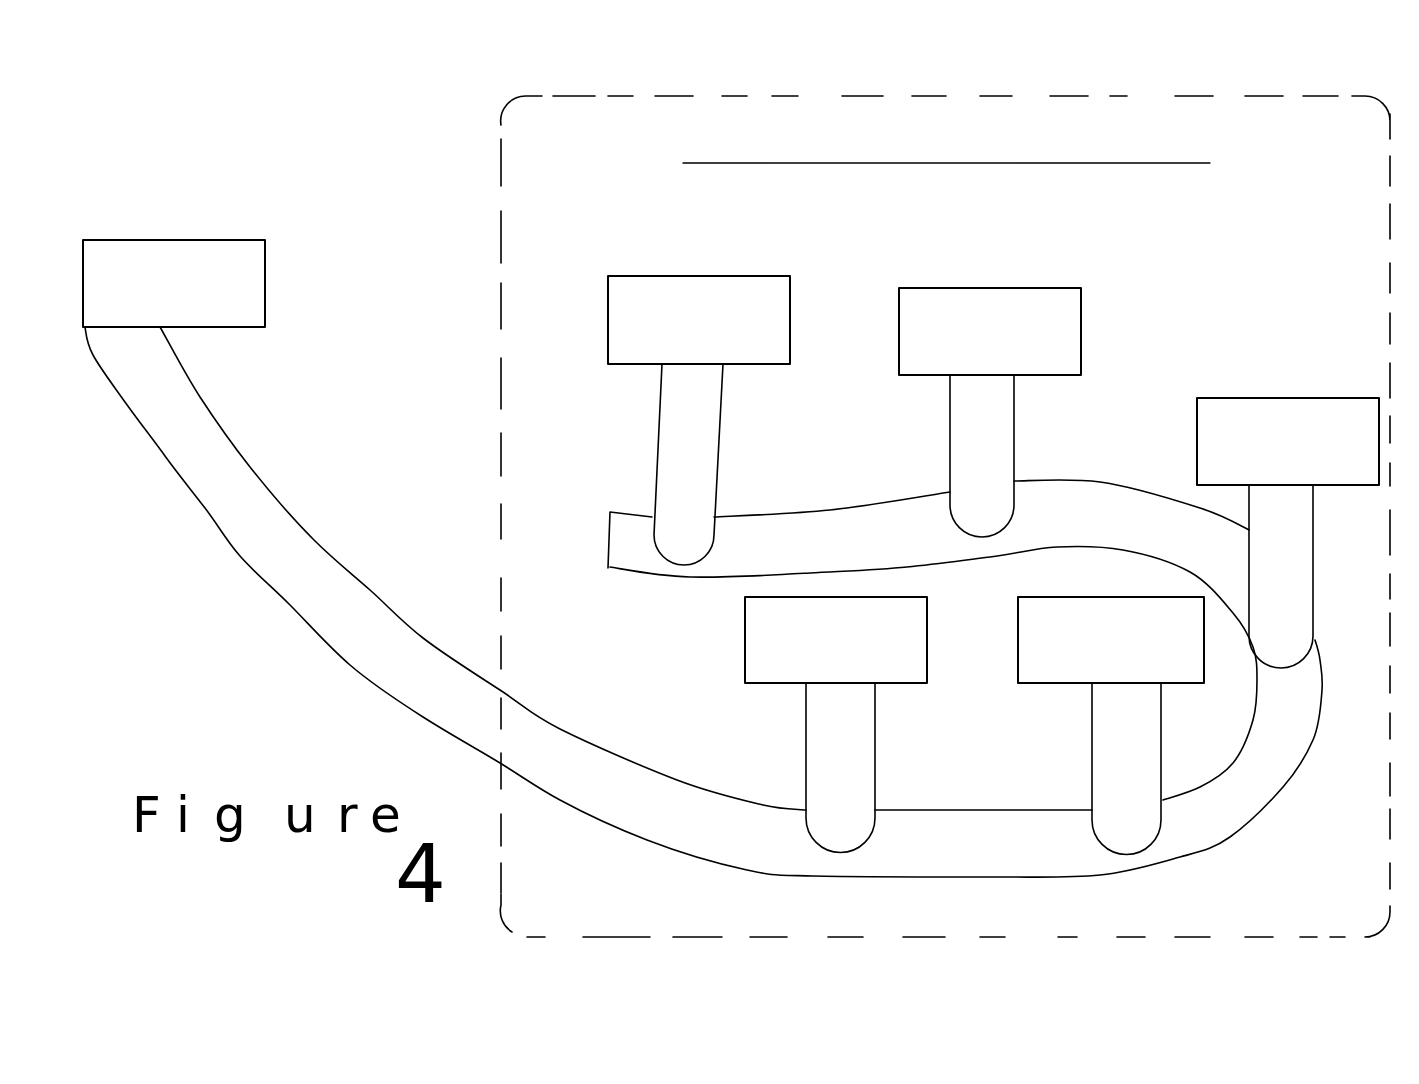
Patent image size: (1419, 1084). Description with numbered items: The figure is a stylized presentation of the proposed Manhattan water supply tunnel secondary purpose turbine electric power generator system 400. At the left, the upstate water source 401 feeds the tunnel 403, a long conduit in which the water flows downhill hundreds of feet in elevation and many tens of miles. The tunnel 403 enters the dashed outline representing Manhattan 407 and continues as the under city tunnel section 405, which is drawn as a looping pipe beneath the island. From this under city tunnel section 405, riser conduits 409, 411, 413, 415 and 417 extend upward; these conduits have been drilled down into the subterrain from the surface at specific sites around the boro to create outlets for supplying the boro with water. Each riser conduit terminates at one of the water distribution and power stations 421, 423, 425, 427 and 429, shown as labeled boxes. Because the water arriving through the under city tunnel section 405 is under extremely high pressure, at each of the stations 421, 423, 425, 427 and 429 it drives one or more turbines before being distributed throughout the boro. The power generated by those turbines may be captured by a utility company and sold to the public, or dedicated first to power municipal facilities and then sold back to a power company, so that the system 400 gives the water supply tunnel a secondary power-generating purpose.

The water supply tunnel secondary purpose turbine electric power generator system 400 is at (549, 424).
The upstate water source 401 is at (266, 289).
The tunnel 403 is at (294, 511).
The under city tunnel section 405 is at (928, 830).
The Manhattan 407 is at (502, 238).
The riser conduit 409 is at (806, 732).
The branch pipe 411 is at (1112, 748).
The branch pipe 413 is at (1272, 543).
The branch pipe 415 is at (962, 443).
The riser conduit 417 is at (705, 442).
The water distribution and power station 421 is at (745, 645).
The water distribution and power station 423 is at (1020, 643).
The water distribution and power station 425 is at (1212, 394).
The water distribution and power station 427 is at (1058, 288).
The water distribution and power station 429 is at (797, 300).